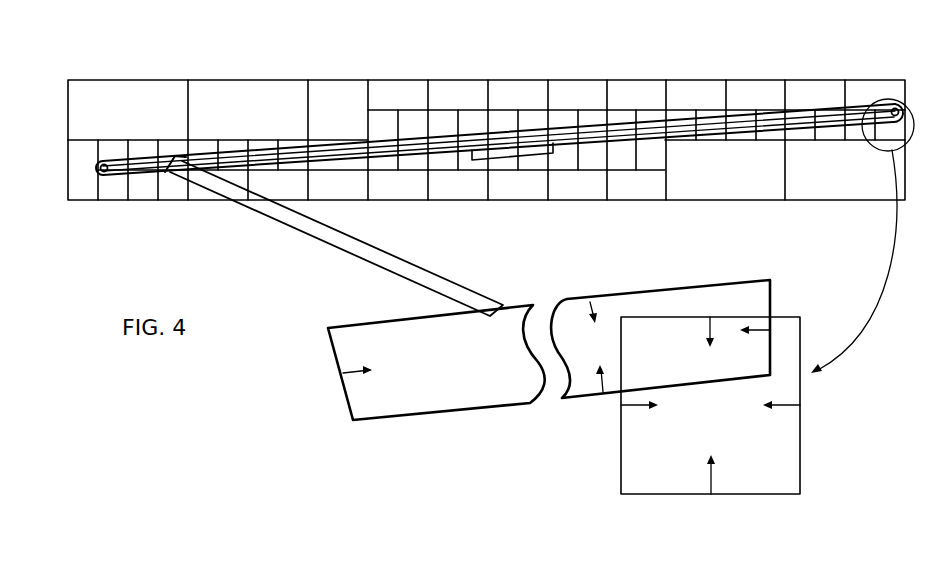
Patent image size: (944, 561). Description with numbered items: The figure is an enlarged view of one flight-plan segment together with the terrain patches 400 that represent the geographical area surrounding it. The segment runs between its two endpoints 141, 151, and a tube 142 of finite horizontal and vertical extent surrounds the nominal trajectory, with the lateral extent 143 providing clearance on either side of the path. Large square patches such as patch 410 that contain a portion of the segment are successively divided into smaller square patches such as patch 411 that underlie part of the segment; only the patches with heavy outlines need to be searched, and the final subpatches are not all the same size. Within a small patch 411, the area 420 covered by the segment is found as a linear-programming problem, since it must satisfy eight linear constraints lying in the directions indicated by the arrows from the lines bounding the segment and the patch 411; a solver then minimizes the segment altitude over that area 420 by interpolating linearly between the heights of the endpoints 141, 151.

The patches 400 is at (180, 265).
The large square patch 410 is at (818, 200).
The small square patch 411 is at (884, 142).
The endpoint 141 is at (104, 174).
The tube 142 is at (472, 160).
The lateral extent 143 is at (655, 290).
The endpoint 151 is at (897, 108).
The area 420 is at (676, 347).